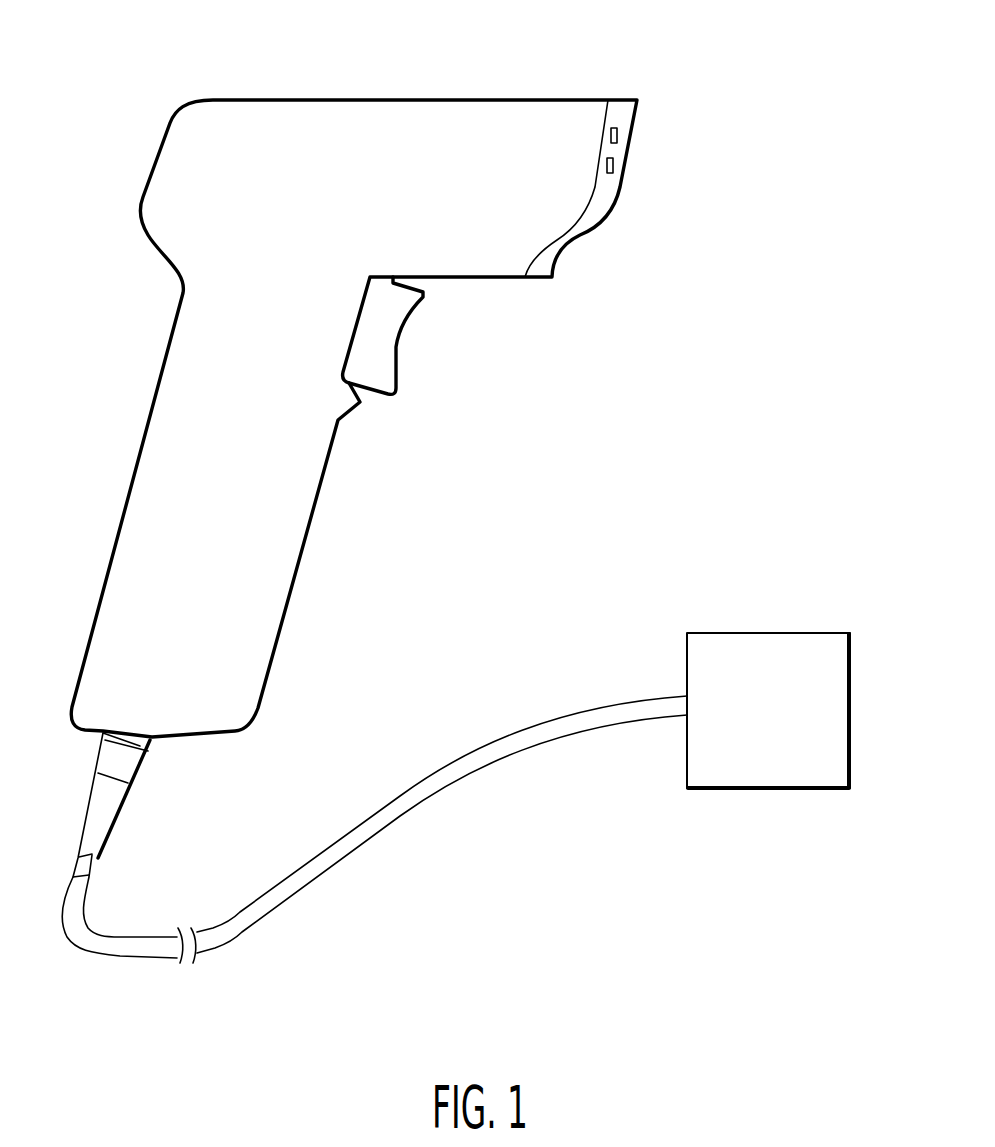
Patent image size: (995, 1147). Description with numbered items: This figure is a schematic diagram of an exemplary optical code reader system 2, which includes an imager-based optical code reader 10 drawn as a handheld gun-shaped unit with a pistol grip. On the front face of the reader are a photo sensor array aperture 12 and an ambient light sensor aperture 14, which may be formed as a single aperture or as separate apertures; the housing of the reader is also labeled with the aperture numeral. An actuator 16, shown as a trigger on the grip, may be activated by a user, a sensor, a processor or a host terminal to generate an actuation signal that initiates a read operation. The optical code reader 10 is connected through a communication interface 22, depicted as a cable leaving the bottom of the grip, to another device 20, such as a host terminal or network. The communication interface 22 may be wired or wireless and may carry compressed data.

The optical code reader system 2 is at (580, 915).
The optical code reader 10 is at (501, 100).
The photo sensor array aperture 12 is at (282, 135).
The ambient light sensor aperture 14 is at (618, 164).
The actuator 16 is at (387, 353).
The device 20 is at (767, 633).
The communication interface 22 is at (290, 873).